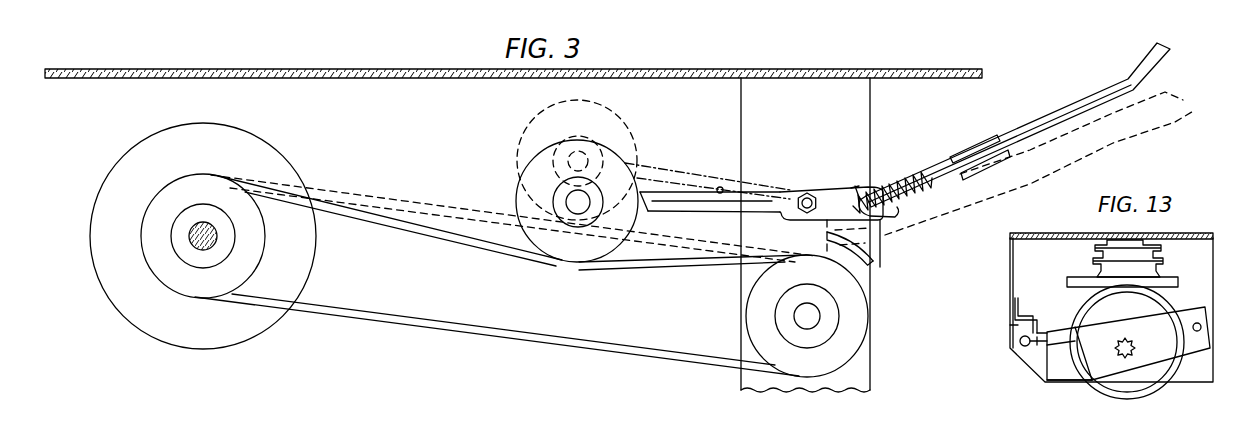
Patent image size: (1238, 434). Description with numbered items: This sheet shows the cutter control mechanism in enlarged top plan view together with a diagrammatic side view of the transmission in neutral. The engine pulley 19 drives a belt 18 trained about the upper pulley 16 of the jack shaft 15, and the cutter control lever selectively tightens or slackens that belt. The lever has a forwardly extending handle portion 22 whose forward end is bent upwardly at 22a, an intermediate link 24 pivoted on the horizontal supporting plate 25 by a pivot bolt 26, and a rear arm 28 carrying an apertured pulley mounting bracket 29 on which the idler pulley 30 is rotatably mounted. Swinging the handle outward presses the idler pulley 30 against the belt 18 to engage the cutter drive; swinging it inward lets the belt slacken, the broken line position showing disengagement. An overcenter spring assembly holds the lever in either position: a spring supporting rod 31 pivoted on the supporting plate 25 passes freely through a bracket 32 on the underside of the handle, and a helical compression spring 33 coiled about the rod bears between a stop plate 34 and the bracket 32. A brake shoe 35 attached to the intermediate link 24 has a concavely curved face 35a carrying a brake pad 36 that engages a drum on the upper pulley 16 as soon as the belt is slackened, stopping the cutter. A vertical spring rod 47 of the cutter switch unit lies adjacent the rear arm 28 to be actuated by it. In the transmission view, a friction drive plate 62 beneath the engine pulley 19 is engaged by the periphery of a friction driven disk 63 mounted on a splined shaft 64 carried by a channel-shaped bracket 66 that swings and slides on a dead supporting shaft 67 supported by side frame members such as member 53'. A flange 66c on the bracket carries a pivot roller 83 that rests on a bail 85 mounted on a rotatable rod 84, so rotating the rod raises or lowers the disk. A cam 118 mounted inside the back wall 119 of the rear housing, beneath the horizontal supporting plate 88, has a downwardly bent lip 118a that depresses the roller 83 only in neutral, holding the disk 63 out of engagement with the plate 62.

In FIG. 3, the side frame member 53' is at (513, 88).
In FIG. 3, the friction drive plate 62 is at (115, 281).
In FIG. 13, the friction drive plate 62 is at (1165, 284).
In FIG. 3, the engine pulley 19 is at (190, 193).
In FIG. 13, the engine pulley 19 is at (1158, 262).
In FIG. 3, the belt 18 is at (497, 328).
In FIG. 3, the idler pulley 30 is at (520, 201).
In FIG. 3, the spring rod 47 is at (717, 188).
In FIG. 3, the rear arm 28 is at (695, 203).
In FIG. 3, the pulley mounting bracket 29 is at (642, 212).
In FIG. 3, the intermediate link 24 is at (825, 187).
In FIG. 3, the pivot bolt 26 is at (808, 193).
In FIG. 3, the stop plate 34 is at (856, 186).
In FIG. 3, the helical compression spring 33 is at (903, 184).
In FIG. 3, the spring supporting rod 31 is at (916, 179).
In FIG. 3, the handle portion 22 is at (1050, 131).
In FIG. 3, the bracket 32 is at (977, 152).
In FIG. 3, the upwardly bent forward end 22a is at (1163, 123).
In FIG. 3, the supporting plate 25 is at (813, 114).
In FIG. 3, the brake shoe 35 is at (881, 244).
In FIG. 3, the concavely curved face 35a is at (876, 262).
In FIG. 3, the brake pad 36 is at (868, 268).
In FIG. 3, the jack shaft 15 is at (815, 292).
In FIG. 3, the upper pulley 16 is at (822, 369).
In FIG. 13, the horizontal supporting plate 88 is at (1066, 233).
In FIG. 13, the back wall 119 is at (1010, 283).
In FIG. 13, the friction driven disk 63 is at (1160, 391).
In FIG. 13, the bracket 66 is at (1106, 373).
In FIG. 13, the splined shaft 64 is at (1136, 350).
In FIG. 13, the dead supporting shaft 67 is at (1192, 327).
In FIG. 13, the flange 66c is at (1063, 378).
In FIG. 13, the cam 118 is at (1030, 316).
In FIG. 13, the downwardly bent lip 118a is at (1010, 325).
In FIG. 13, the pivot roller 83 is at (1042, 333).
In FIG. 13, the rotatable rod 84 is at (1020, 341).
In FIG. 13, the bail 85 is at (1083, 345).